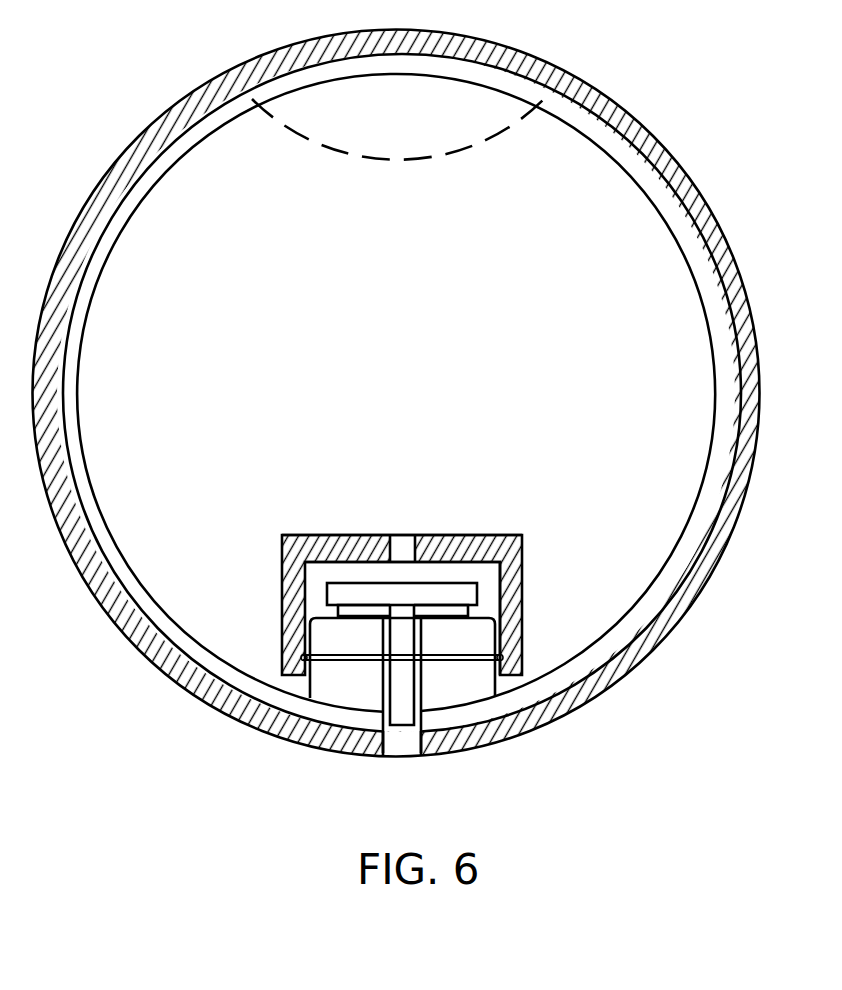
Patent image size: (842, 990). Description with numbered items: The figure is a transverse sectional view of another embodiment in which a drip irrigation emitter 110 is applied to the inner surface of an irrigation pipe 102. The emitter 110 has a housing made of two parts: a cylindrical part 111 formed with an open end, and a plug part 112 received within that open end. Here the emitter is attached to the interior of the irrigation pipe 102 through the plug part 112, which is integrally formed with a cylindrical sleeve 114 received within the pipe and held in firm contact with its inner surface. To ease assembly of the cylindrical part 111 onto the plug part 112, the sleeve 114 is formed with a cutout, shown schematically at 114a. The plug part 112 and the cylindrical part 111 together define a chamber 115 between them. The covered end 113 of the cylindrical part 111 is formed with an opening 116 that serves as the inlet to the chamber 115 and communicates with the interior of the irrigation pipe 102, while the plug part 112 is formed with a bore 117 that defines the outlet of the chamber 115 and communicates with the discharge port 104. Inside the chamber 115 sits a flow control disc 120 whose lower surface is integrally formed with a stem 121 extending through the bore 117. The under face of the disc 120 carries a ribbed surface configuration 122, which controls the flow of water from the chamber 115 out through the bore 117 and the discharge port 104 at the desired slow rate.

The irrigation pipe 102 is at (688, 173).
The discharge port 104 is at (402, 752).
The emitter 110 is at (347, 526).
The cylindrical part 111 is at (520, 588).
The plug part 112 is at (340, 690).
The covered end 113 is at (453, 537).
The cylindrical sleeve 114 is at (200, 657).
The cutout 114a is at (474, 72).
The chamber 115 is at (483, 573).
The opening 116 is at (402, 548).
The bore 117 is at (418, 727).
The flow control disc 120 is at (350, 592).
The stem 121 is at (403, 680).
The ribbed surface configuration 122 is at (337, 612).